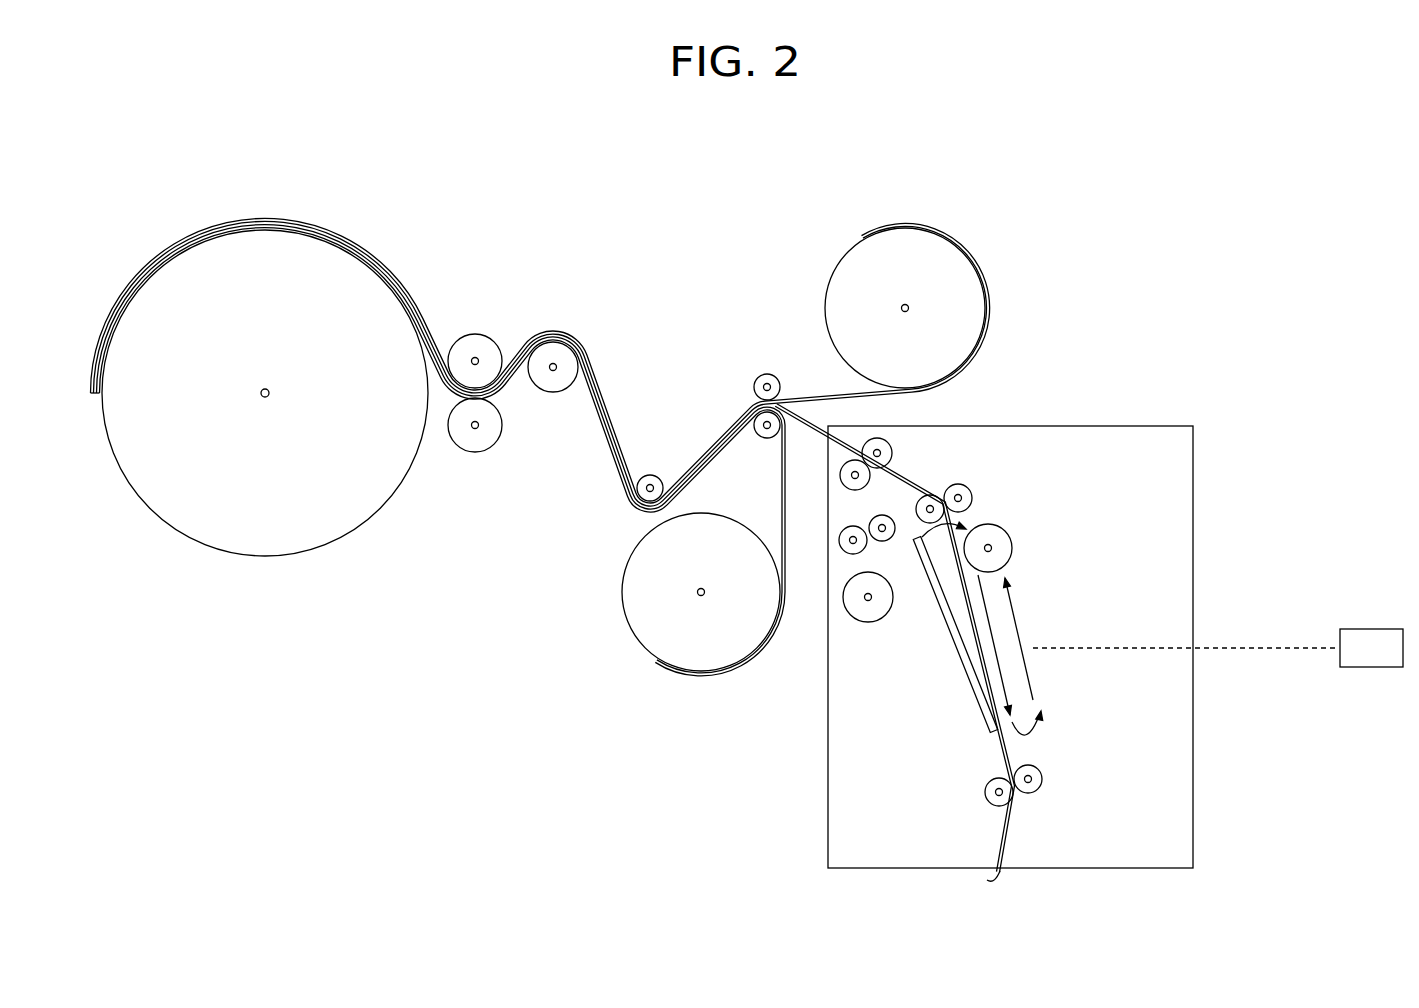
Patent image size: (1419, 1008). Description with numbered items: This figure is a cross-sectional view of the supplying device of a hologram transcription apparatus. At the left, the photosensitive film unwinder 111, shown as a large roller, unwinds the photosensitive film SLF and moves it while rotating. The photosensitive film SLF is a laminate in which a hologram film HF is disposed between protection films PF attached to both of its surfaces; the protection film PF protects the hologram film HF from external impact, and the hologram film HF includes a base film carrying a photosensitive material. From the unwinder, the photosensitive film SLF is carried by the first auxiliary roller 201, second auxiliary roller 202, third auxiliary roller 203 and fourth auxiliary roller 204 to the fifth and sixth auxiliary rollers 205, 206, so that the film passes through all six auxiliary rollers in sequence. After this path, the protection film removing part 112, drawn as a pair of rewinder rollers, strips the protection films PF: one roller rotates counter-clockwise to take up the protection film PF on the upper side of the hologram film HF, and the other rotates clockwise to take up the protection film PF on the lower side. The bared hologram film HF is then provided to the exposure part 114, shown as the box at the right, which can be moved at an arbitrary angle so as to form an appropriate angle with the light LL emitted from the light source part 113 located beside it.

The photosensitive film unwinder 111 is at (262, 545).
The protection film removing part 112 is at (848, 270).
The light source part 113 is at (1372, 629).
The exposure part 114 is at (1146, 427).
The first auxiliary roller 201 is at (474, 345).
The second auxiliary roller 202 is at (475, 452).
The third auxiliary roller 203 is at (553, 392).
The fourth auxiliary roller 204 is at (651, 475).
The fifth auxiliary roller 205 is at (766, 372).
The sixth auxiliary roller 206 is at (767, 440).
The protection film PF is at (987, 318).
The hologram film HF is at (798, 425).
The photosensitive film SLF is at (1066, 320).
The light LL is at (1240, 648).